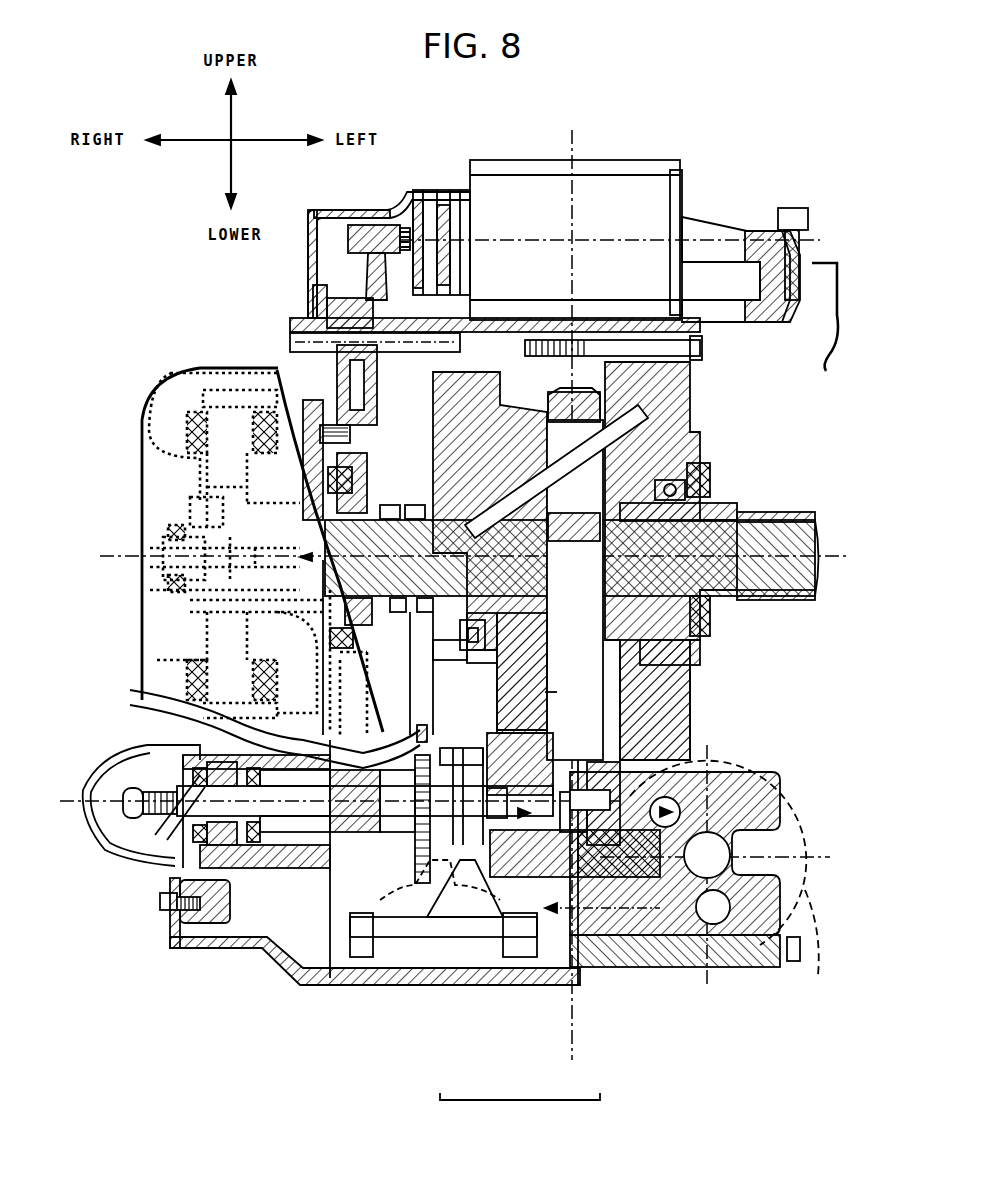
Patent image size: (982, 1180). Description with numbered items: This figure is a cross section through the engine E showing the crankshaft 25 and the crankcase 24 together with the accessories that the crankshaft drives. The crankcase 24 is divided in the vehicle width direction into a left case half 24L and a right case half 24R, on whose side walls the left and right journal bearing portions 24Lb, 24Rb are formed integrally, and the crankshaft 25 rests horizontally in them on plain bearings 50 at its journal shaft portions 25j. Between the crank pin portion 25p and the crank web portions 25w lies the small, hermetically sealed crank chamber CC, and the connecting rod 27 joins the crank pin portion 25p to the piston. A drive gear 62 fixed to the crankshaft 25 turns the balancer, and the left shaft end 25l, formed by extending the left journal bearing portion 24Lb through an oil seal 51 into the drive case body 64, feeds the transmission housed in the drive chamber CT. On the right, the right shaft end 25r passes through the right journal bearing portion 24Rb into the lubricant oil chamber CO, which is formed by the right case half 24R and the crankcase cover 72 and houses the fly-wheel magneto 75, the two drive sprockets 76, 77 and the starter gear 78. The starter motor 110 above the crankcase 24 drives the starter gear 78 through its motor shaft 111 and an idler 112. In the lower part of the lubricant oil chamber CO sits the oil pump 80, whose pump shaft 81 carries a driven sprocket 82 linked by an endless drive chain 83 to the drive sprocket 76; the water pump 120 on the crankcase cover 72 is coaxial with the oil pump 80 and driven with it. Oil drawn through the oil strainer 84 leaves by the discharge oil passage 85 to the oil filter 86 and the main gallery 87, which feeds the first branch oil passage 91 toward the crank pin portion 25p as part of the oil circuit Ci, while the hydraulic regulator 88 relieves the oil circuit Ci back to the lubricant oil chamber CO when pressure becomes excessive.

The starter motor 110 is at (548, 221).
The motor shaft 111 is at (372, 235).
The idler 112 is at (318, 300).
The drive case body 64 is at (822, 235).
The engine E is at (705, 420).
The crank pin portion 25p is at (515, 392).
The drive gear 62 is at (440, 420).
The crankshaft 25 is at (786, 625).
The left shaft end 25l is at (762, 540).
The crank web portions 25w is at (574, 590).
The connecting rod 27 is at (596, 420).
The first branch oil passage 91 is at (585, 445).
The drive sprocket 76 is at (405, 490).
The drive sprocket 77 is at (386, 507).
The oil seal 51 is at (715, 485).
The drive chamber CT is at (790, 448).
The journal shaft portions 25j is at (704, 612).
The plain bearings 50 is at (702, 660).
The right journal bearing portion 24Rb is at (478, 640).
The left journal bearing portion 24Lb is at (698, 700).
The endless drive chain 83 is at (567, 691).
The discharge oil passage 85 is at (548, 798).
The crankcase cover 72 is at (142, 528).
The fly-wheel magneto 75 is at (185, 425).
The starter gear 78 is at (300, 372).
The right shaft end 25r is at (212, 622).
The pump shaft 81 is at (420, 795).
The driven sprocket 82 is at (412, 850).
The water pump 120 is at (142, 856).
The lubricant oil chamber CO is at (265, 905).
The oil strainer 84 is at (440, 915).
The crank chamber CC is at (385, 892).
The oil pump 80 is at (478, 885).
The left case half 24L is at (688, 919).
The right case half 24R is at (530, 942).
The crankcase 24 is at (520, 1111).
The oil circuit Ci is at (700, 745).
The main gallery 87 is at (732, 857).
The hydraulic regulator 88 is at (660, 915).
The oil filter 86 is at (814, 948).